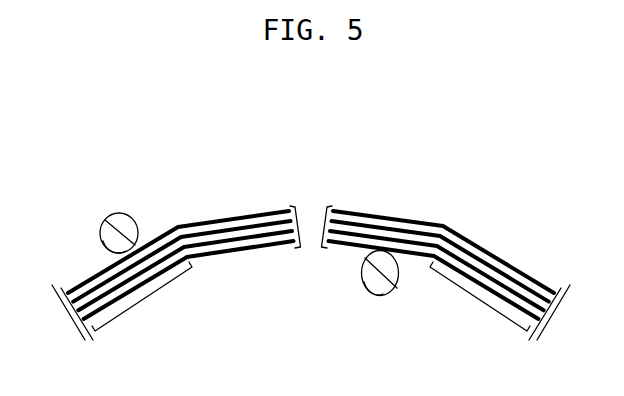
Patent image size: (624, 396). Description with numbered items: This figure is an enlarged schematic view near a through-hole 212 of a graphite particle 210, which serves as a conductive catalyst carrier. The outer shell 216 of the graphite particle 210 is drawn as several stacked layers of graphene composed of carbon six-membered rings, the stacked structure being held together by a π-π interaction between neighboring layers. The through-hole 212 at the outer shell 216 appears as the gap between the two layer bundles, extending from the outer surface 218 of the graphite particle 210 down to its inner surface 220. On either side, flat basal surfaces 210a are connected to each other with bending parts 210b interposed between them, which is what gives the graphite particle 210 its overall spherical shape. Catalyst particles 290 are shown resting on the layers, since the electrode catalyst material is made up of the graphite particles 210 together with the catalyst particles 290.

The graphite particle 210 is at (311, 244).
The flat basal surface 210a is at (146, 302).
The bent portion 210b is at (301, 228).
The through-hole 212 is at (324, 206).
The outer shell 216 is at (421, 237).
The outer surface 218 is at (219, 218).
The inner surface 220 is at (252, 249).
The catalyst particle 290 is at (115, 214).